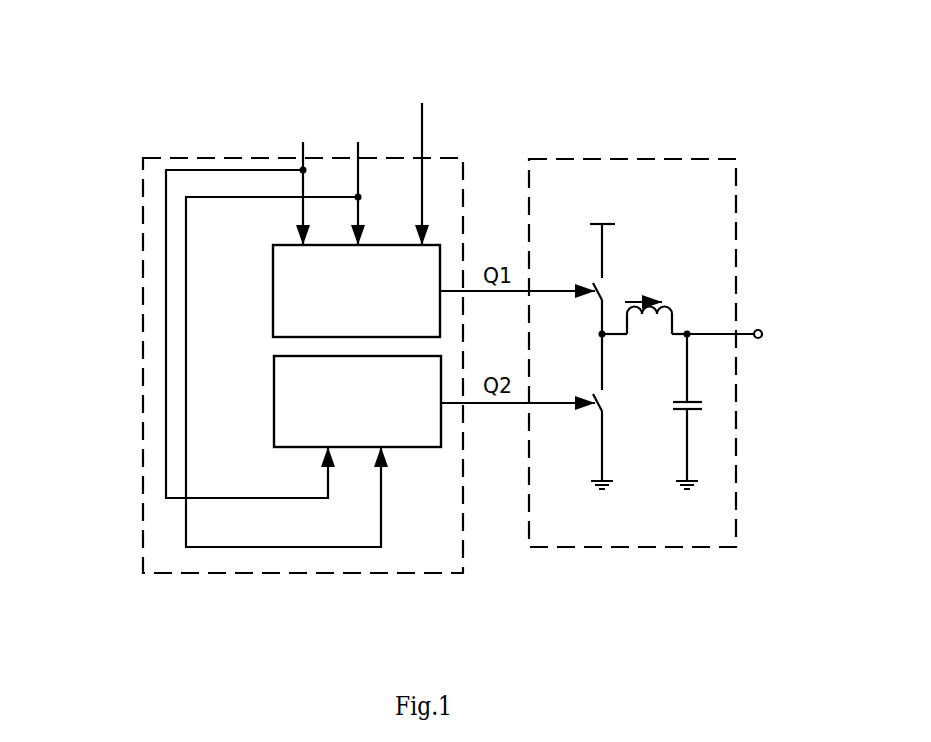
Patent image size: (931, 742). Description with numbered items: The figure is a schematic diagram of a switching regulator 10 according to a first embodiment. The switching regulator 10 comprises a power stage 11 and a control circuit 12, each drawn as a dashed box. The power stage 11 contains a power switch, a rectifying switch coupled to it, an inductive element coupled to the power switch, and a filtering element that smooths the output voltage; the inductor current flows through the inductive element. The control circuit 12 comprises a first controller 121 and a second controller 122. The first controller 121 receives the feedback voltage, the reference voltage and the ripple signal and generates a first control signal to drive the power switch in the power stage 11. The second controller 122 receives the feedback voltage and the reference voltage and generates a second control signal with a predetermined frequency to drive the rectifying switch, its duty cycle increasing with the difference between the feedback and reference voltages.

The switching regulator 10 is at (223, 54).
The power stage 11 is at (670, 159).
The control circuit 12 is at (143, 215).
The first controller 121 is at (373, 304).
The second controller 122 is at (373, 412).